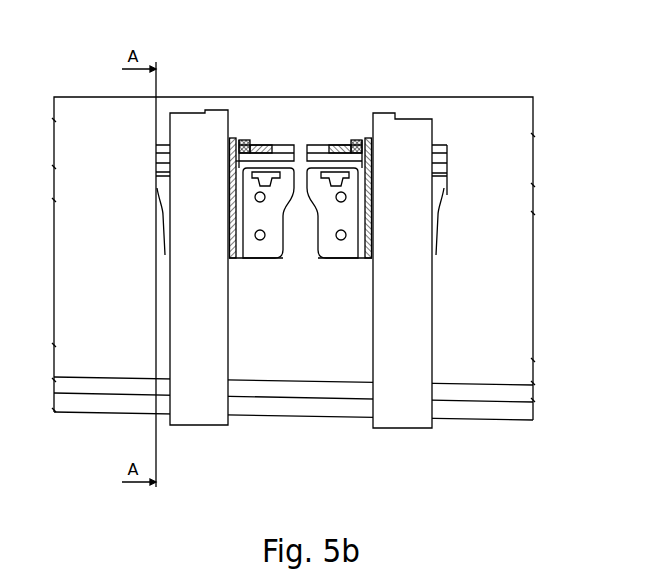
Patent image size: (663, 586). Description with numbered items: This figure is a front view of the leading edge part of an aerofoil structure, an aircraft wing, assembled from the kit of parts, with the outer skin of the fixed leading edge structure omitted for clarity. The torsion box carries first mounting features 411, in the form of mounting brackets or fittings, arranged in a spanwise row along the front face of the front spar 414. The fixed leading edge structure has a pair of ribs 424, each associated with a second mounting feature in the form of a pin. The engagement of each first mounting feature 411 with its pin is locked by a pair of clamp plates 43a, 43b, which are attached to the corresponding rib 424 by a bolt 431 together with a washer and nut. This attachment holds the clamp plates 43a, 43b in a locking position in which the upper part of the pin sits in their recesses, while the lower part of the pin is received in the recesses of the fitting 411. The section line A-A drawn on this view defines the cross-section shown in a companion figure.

The first mounting feature 411 is at (318, 285).
The front spar 414 is at (345, 248).
The rib 424 is at (213, 256).
The bolt 431 is at (343, 155).
The clamp plate 43a is at (327, 158).
The clamp plate 43b is at (273, 158).